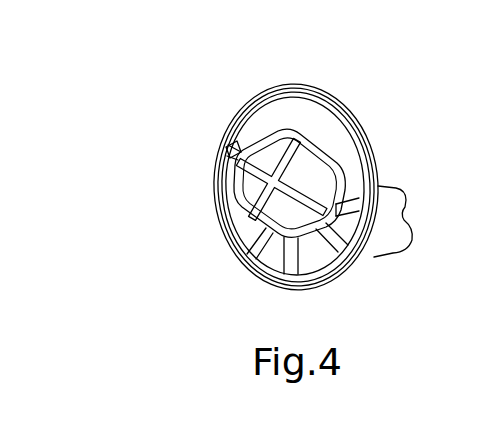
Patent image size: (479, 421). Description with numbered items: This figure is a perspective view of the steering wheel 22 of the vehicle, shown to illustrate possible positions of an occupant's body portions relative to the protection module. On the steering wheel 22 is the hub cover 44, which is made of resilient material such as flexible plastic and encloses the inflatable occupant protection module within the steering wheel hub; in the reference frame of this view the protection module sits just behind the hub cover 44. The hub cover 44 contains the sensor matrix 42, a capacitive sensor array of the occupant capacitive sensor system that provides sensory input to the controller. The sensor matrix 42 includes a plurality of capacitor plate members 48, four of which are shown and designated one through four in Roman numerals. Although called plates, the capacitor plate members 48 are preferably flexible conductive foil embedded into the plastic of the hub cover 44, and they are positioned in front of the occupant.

The steering wheel 22 is at (372, 109).
The sensor matrix 42 is at (300, 138).
The hub cover 44 is at (281, 137).
The capacitor plate members 48 is at (243, 180).